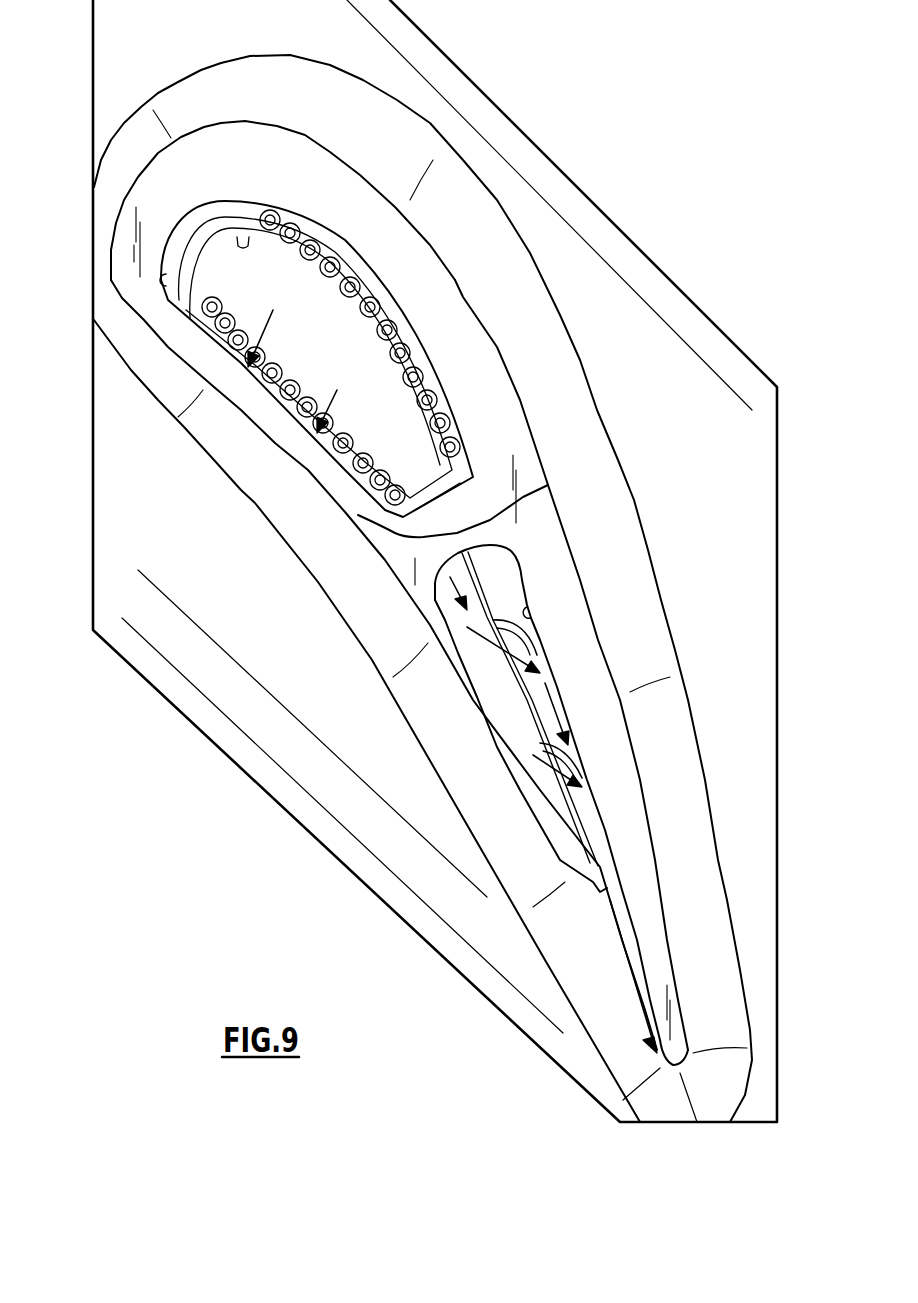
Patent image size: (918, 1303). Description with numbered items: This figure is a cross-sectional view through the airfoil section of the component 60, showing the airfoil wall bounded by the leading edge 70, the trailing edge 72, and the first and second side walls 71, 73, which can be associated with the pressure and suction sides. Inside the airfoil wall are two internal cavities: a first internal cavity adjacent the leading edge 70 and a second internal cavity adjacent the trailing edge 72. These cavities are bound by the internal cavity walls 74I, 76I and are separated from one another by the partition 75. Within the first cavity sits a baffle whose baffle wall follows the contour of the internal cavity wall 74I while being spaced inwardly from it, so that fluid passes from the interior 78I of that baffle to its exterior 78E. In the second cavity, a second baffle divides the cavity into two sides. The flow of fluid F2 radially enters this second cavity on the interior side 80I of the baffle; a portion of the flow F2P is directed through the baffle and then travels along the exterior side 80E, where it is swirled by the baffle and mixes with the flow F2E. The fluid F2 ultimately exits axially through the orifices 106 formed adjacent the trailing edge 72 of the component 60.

The component 60 is at (650, 236).
The leading edge 70 is at (148, 147).
The first side wall 71 is at (355, 533).
The trailing edge 72 is at (677, 1093).
The second side wall 73 is at (577, 498).
The internal cavity wall 74I is at (162, 286).
The partition 75 is at (467, 530).
The internal cavity wall 76I is at (534, 620).
The exterior of the baffle 78E is at (230, 215).
The interior of the baffle 78I is at (249, 237).
The exterior side of the baffle 80E is at (517, 633).
The interior side of the baffle 80I is at (480, 590).
The orifices 106 is at (633, 960).
The flow of fluid F2 is at (470, 580).
The portion of the flow F2P is at (557, 753).
The flow F2E is at (560, 713).